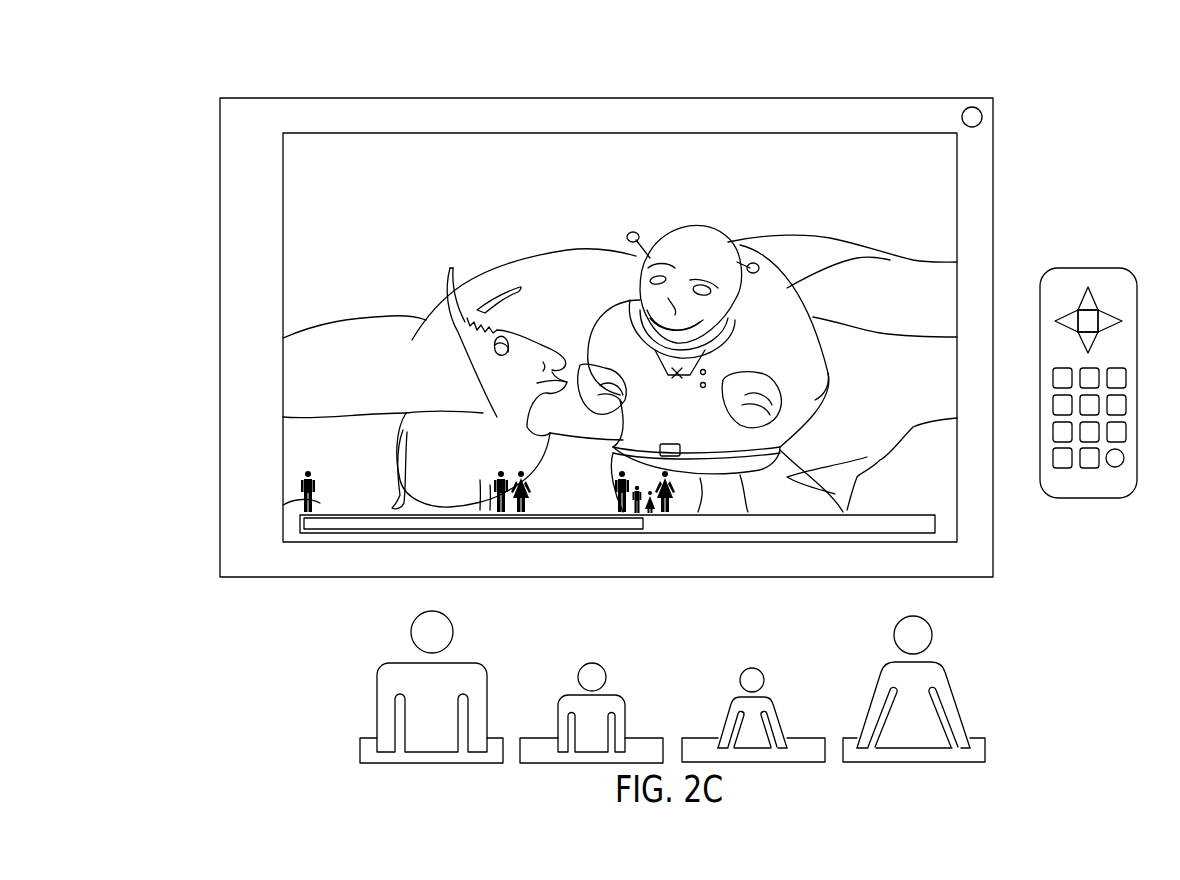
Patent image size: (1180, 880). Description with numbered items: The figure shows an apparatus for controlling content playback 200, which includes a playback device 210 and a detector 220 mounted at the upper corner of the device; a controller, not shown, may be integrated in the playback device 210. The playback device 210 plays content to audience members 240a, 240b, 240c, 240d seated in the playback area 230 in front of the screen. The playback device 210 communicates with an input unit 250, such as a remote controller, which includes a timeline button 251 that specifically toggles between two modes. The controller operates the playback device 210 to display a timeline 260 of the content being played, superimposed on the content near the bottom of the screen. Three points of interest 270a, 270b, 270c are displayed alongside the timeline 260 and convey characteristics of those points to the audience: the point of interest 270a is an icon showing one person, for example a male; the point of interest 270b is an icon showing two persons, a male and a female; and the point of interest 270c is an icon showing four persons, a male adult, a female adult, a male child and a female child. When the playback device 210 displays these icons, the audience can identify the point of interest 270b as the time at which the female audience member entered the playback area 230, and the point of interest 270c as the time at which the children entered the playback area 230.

The apparatus for controlling content playback 200 is at (143, 93).
The playback device 210 is at (607, 97).
The detector 220 is at (982, 114).
The playback area 230 is at (705, 662).
The audience member 240a is at (412, 636).
The audience member 240b is at (933, 637).
The audience member 240c is at (581, 680).
The audience member 240d is at (765, 681).
The input unit 250 is at (1090, 268).
The timeline button 251 is at (1125, 458).
The timeline 260 is at (350, 522).
The point of interest 270a is at (302, 500).
The point of interest 270b is at (530, 505).
The point of interest 270c is at (670, 503).